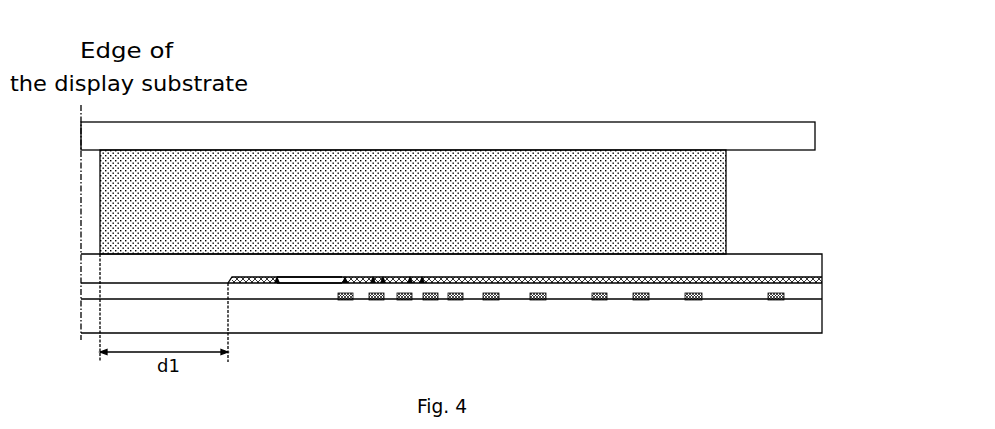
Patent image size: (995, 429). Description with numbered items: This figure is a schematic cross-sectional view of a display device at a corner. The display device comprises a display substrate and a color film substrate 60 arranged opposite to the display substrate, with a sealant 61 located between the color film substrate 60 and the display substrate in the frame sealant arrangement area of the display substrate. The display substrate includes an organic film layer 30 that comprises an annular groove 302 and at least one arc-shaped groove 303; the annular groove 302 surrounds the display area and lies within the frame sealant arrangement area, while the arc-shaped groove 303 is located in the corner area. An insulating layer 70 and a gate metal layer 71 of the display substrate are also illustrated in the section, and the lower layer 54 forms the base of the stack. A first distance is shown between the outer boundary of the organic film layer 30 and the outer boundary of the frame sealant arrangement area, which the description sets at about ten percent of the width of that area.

The color film substrate 60 is at (553, 138).
The sealant 61 is at (428, 195).
The insulating layer 70 is at (813, 268).
The gate metal layer 71 is at (695, 300).
The display substrate 54 is at (802, 323).
The organic film layer 30 is at (240, 283).
The annular groove 302 is at (300, 283).
The arc-shaped groove 303 is at (383, 283).